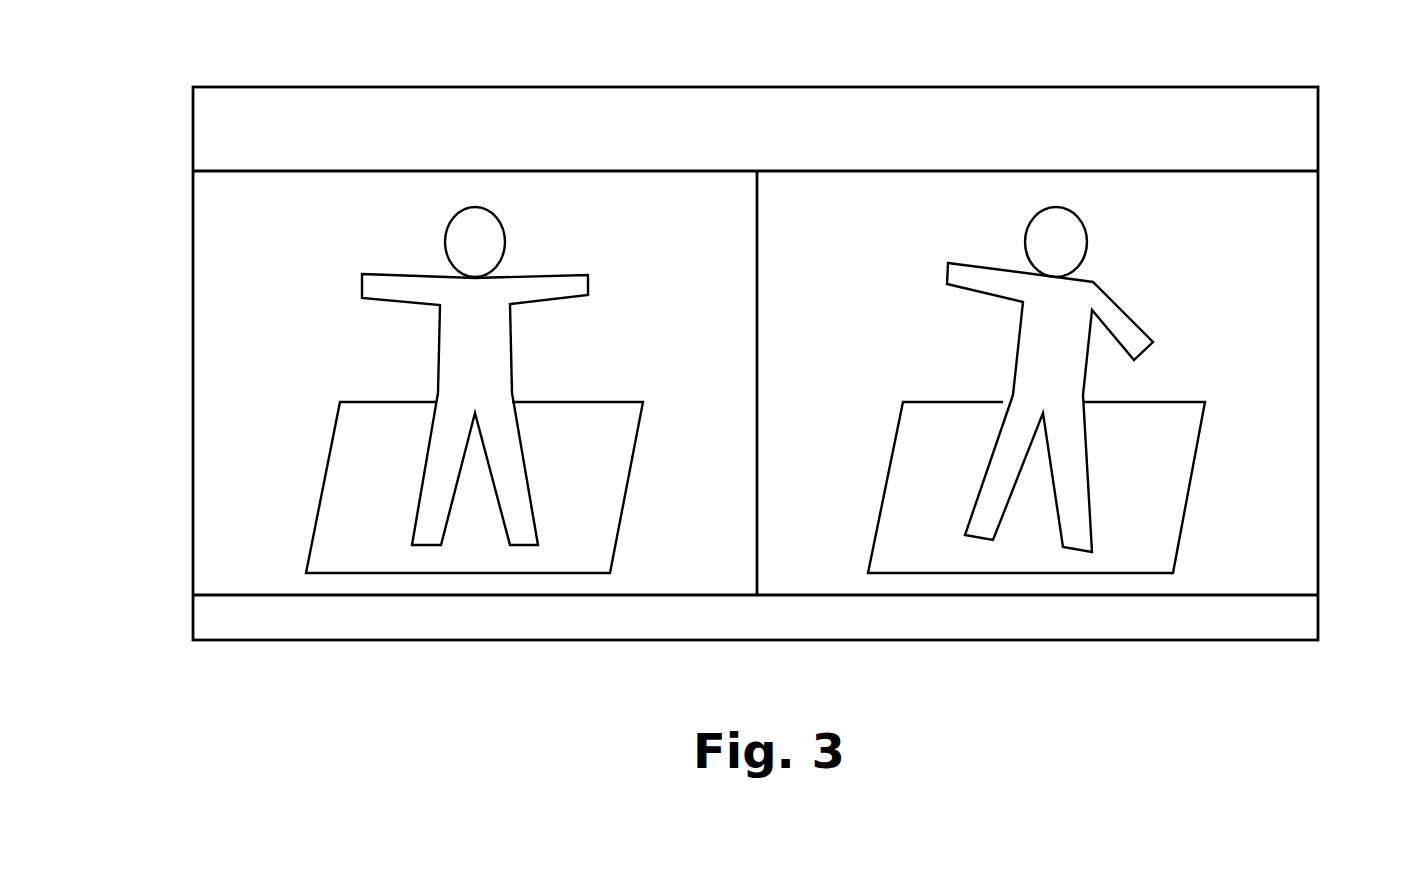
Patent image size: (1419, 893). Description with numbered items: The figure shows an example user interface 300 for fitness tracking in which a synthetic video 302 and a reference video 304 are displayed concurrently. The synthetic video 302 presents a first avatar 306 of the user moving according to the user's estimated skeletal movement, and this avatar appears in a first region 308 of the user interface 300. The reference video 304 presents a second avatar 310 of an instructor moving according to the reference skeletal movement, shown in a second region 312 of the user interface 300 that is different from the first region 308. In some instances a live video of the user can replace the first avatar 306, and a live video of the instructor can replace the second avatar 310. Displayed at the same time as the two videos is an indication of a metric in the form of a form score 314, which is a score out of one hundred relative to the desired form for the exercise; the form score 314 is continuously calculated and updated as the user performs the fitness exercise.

The user interface 300 is at (245, 87).
The synthetic video 302 is at (1274, 287).
The reference video 304 is at (230, 265).
The first avatar 306 is at (1089, 239).
The first region 308 is at (1177, 171).
The second avatar 310 is at (545, 275).
The second region 312 is at (334, 171).
The form score 314 is at (870, 110).